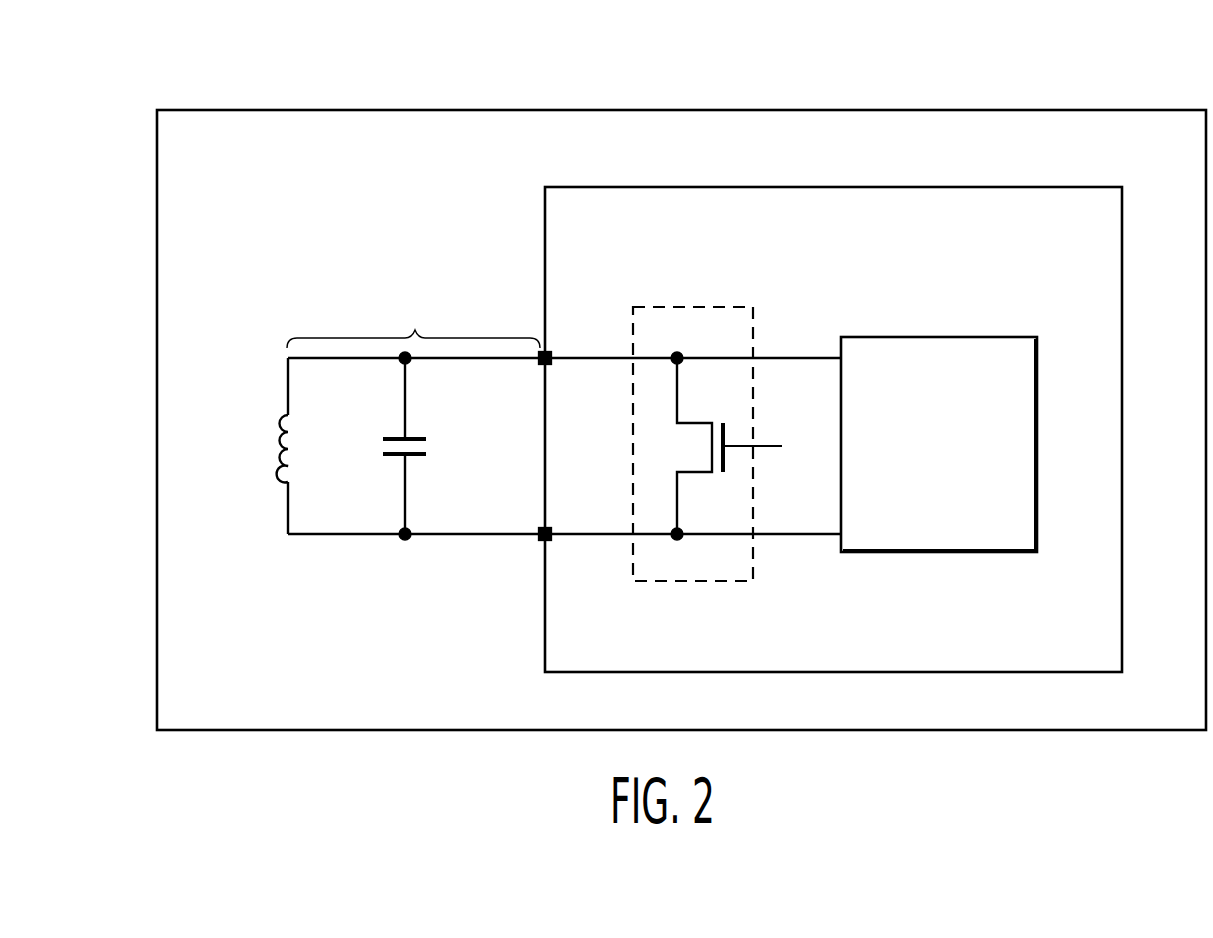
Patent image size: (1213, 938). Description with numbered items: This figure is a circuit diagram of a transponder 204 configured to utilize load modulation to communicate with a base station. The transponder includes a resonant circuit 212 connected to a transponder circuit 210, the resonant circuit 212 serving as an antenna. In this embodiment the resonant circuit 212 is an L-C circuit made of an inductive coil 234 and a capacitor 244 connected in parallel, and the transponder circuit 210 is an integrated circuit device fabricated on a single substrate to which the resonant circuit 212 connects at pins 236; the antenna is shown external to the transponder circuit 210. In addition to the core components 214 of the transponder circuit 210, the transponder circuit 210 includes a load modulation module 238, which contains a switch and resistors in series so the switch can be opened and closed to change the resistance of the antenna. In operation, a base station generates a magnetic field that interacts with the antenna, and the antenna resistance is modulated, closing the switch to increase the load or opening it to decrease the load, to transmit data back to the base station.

The transponder 204 is at (916, 110).
The transponder circuit 210 is at (545, 212).
The resonant circuit 212 is at (371, 417).
The core components 214 is at (984, 337).
The inductive coil 234 is at (280, 455).
The pins 236 is at (551, 352).
The load modulation module 238 is at (720, 307).
The capacitor 244 is at (397, 436).